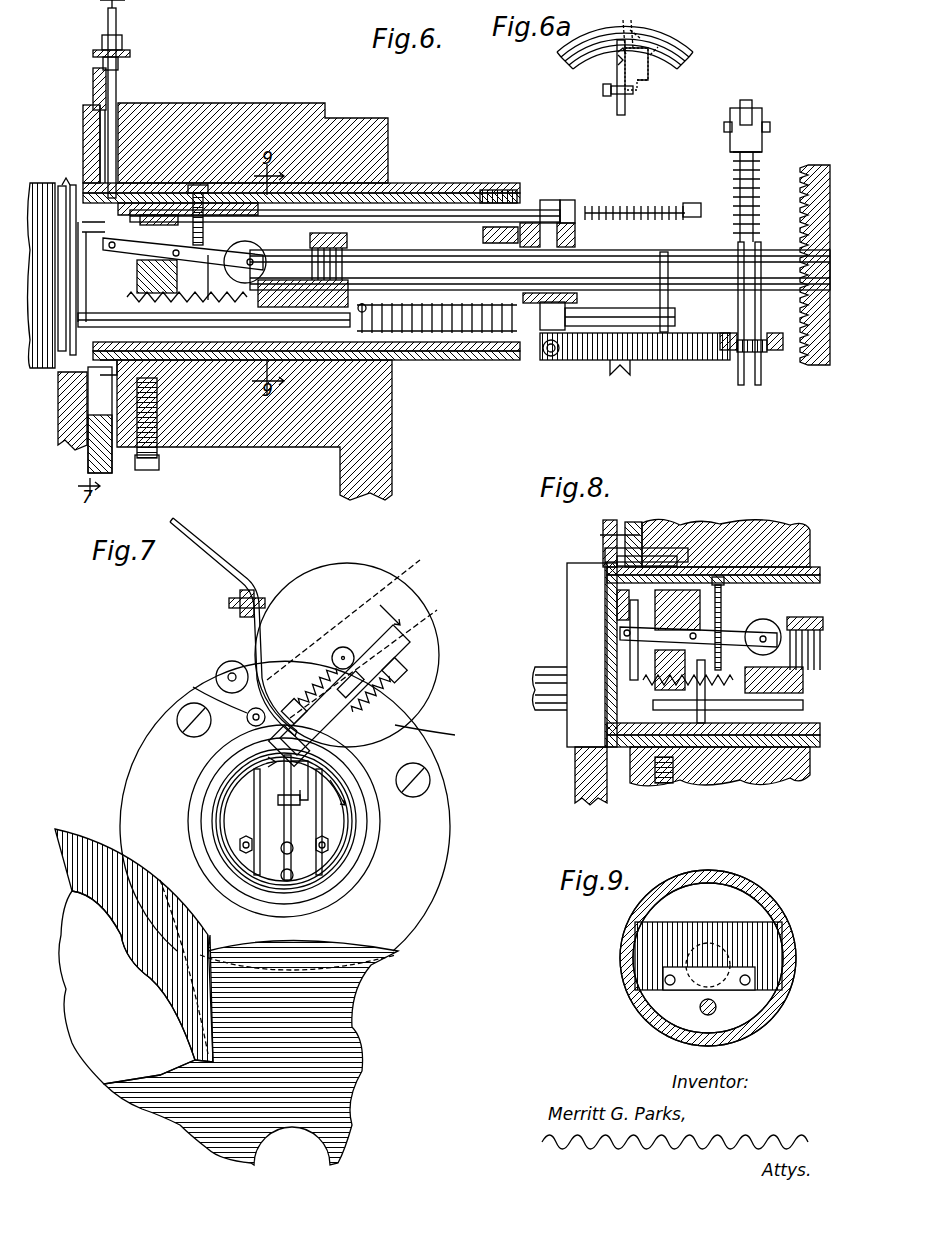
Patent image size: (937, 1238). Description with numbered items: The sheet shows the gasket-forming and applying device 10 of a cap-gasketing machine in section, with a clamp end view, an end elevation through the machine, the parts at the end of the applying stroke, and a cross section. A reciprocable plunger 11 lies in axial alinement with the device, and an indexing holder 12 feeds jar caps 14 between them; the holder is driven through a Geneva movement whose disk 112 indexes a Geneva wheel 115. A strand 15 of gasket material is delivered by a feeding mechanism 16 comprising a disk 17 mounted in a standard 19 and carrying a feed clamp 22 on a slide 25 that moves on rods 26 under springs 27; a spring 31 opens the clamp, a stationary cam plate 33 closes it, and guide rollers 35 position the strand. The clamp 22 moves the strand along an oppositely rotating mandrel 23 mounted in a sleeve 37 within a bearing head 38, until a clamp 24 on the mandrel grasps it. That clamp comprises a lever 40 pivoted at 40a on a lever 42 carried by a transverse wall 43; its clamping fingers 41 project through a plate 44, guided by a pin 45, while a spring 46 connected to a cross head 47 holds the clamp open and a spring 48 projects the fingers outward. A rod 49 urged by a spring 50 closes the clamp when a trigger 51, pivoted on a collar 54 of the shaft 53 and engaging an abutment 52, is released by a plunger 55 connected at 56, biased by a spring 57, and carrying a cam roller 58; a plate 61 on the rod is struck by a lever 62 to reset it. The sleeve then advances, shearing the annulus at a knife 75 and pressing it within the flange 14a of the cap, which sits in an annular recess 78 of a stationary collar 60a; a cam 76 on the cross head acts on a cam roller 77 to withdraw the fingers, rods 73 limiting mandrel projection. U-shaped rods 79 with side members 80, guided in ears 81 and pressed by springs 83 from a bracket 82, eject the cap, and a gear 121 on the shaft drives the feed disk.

In FIG. 6, the gasket-forming and applying device 10 is at (408, 178).
In FIG. 6, the reciprocable plunger 11 is at (34, 368).
In FIG. 8, the reciprocable plunger 11 is at (535, 712).
In FIG. 6, the indexing holder 12 is at (62, 447).
In FIG. 6, the jar cap 14 is at (60, 186).
In FIG. 7, the jar cap 14 is at (381, 604).
In FIG. 6, the flange 14a is at (62, 184).
In FIG. 6, the strand 15 is at (118, 30).
In FIG. 7, the strand 15 is at (200, 545).
In FIG. 8, the strand 15 is at (603, 548).
In FIG. 6, the feeding mechanism 16 is at (288, 280).
In FIG. 7, the feeding mechanism 16 is at (343, 556).
In FIG. 7, the disk 17 is at (385, 576).
In FIG. 8, the disk 17 is at (639, 530).
In FIG. 6, the standard 19 is at (392, 460).
In FIG. 7, the feed clamp 22 is at (353, 705).
In FIG. 6, the mandrel 23 is at (405, 360).
In FIG. 6A, the mandrel 23 is at (680, 52).
In FIG. 7, the mandrel 23 is at (355, 850).
In FIG. 8, the mandrel 23 is at (790, 747).
In FIG. 9, the mandrel 23 is at (775, 1015).
In FIG. 6A, the clamp 24 is at (615, 54).
In FIG. 7, the clamp 24 is at (268, 762).
In FIG. 7, the slide 25 is at (342, 647).
In FIG. 7, the rods 26 is at (344, 668).
In FIG. 7, the springs 27 is at (339, 646).
In FIG. 7, the spring 31 is at (351, 675).
In FIG. 8, the cam plate 33 is at (606, 532).
In FIG. 7, the guide rollers 35 is at (224, 668).
In FIG. 6, the sleeve 37 is at (442, 183).
In FIG. 6A, the sleeve 37 is at (688, 62).
In FIG. 7, the sleeve 37 is at (350, 880).
In FIG. 8, the sleeve 37 is at (805, 565).
In FIG. 9, the sleeve 37 is at (640, 1010).
In FIG. 6, the bearing head 38 is at (292, 103).
In FIG. 7, the bearing head 38 is at (423, 917).
In FIG. 8, the bearing head 38 is at (715, 522).
In FIG. 6, the lever 40 is at (170, 272).
In FIG. 6A, the lever 40 is at (617, 108).
In FIG. 7, the lever 40 is at (292, 818).
In FIG. 8, the lever 40 is at (622, 677).
In FIG. 6A, the pivot 40a is at (634, 90).
In FIG. 8, the pivot 40a is at (640, 645).
In FIG. 6, the clamping fingers 41 is at (100, 150).
In FIG. 6A, the clamping fingers 41 is at (631, 24).
In FIG. 8, the clamping fingers 41 is at (605, 600).
In FIG. 6, the lever 42 is at (210, 300).
In FIG. 6A, the lever 42 is at (638, 95).
In FIG. 8, the lever 42 is at (610, 640).
In FIG. 7, the transverse wall 43 is at (300, 848).
In FIG. 8, the transverse wall 43 is at (700, 750).
In FIG. 6A, the plate 44 is at (658, 47).
In FIG. 8, the plate 44 is at (665, 556).
In FIG. 8, the pin 45 is at (619, 605).
In FIG. 6, the spring 46 is at (236, 300).
In FIG. 6, the cross head 47 is at (290, 310).
In FIG. 8, the cross head 47 is at (805, 617).
In FIG. 9, the cross head 47 is at (760, 925).
In FIG. 6, the spring 48 is at (200, 185).
In FIG. 8, the spring 48 is at (720, 577).
In FIG. 6, the rod 49 is at (560, 360).
In FIG. 7, the rod 49 is at (297, 870).
In FIG. 9, the rod 49 is at (700, 1007).
In FIG. 6, the spring 50 is at (450, 335).
In FIG. 6, the trigger 51 is at (598, 360).
In FIG. 6, the abutment 52 is at (650, 330).
In FIG. 6, the shaft 53 is at (712, 250).
In FIG. 6, the collar 54 is at (530, 223).
In FIG. 6, the plunger 55 is at (765, 170).
In FIG. 6, the connection 56 is at (742, 380).
In FIG. 6, the spring 57 is at (735, 162).
In FIG. 6, the cam roller 58 is at (748, 108).
In FIG. 6, the stationary collar 60a is at (146, 470).
In FIG. 8, the stationary collar 60a is at (668, 783).
In FIG. 6, the plate 61 is at (660, 252).
In FIG. 6, the lever 62 is at (625, 375).
In FIG. 9, the rods 73 is at (672, 967).
In FIG. 6, the knife 75 is at (122, 135).
In FIG. 8, the knife 75 is at (605, 553).
In FIG. 8, the cam 76 is at (758, 725).
In FIG. 9, the cam 76 is at (738, 925).
In FIG. 6, the cam roller 77 is at (239, 248).
In FIG. 8, the cam roller 77 is at (763, 619).
In FIG. 6, the annular recess 78 is at (102, 416).
In FIG. 6, the U-shaped rods 79 is at (72, 360).
In FIG. 7, the U-shaped rods 79 is at (254, 812).
In FIG. 6, the side member 80 is at (432, 224).
In FIG. 6, the ears 81 is at (572, 200).
In FIG. 6, the bracket 82 is at (615, 206).
In FIG. 6, the springs 83 is at (672, 204).
In FIG. 7, the disk 112 is at (78, 838).
In FIG. 7, the Geneva wheel 115 is at (362, 1005).
In FIG. 6, the gear 121 is at (806, 365).